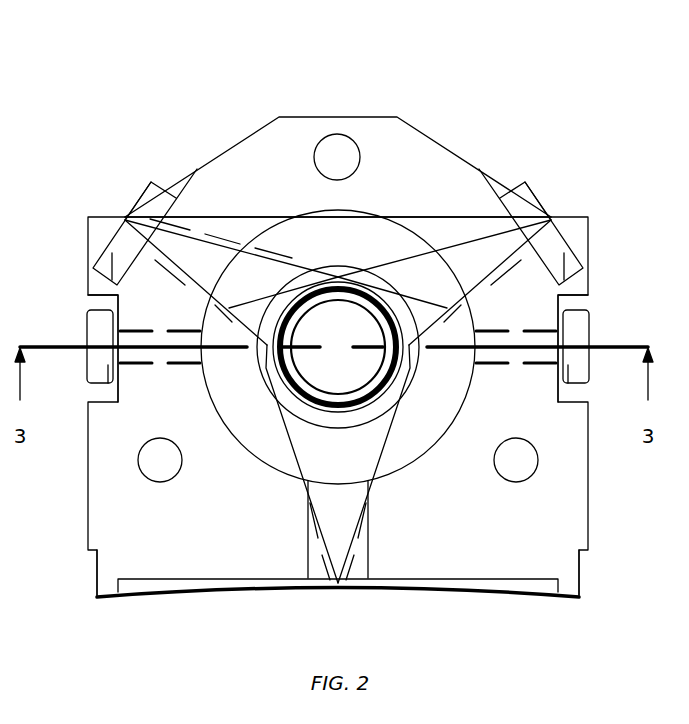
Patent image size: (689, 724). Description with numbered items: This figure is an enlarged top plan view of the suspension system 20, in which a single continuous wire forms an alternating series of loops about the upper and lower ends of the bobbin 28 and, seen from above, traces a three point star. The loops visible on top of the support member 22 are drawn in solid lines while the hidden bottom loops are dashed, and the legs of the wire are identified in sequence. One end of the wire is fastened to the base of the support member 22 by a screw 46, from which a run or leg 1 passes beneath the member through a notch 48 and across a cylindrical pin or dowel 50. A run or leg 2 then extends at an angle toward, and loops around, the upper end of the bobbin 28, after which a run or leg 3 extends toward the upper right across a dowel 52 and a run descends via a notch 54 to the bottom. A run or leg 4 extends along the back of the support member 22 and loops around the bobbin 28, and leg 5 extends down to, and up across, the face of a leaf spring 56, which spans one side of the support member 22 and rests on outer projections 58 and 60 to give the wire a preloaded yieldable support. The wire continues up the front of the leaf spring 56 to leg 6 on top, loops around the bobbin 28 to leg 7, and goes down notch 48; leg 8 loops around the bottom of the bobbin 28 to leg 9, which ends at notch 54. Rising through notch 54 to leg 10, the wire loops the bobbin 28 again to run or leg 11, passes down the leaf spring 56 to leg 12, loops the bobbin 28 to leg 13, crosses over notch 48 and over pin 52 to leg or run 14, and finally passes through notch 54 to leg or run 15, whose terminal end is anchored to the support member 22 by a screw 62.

The chuck assembly 20 is at (175, 118).
The support member 22 is at (90, 497).
The leg or run 14 is at (258, 216).
The notch 48 is at (120, 216).
The cylindrical pin or dowel 50 is at (126, 212).
The dowel 52 is at (549, 210).
The notch 54 is at (556, 216).
The leg 13 is at (265, 238).
The run or leg 4 is at (412, 240).
The leg 7 is at (246, 258).
The leg 10 is at (465, 258).
The run or leg 2 is at (155, 244).
The leg 8 is at (202, 290).
The leg 9 is at (465, 292).
The run or leg 3 is at (450, 300).
The bobbin 28 is at (325, 316).
The run or leg 11 is at (342, 464).
The leg 12 is at (382, 452).
The leg 5 is at (293, 452).
The leg 6 is at (350, 537).
The run or leg 1 is at (88, 300).
The leg or run 15 is at (588, 300).
The screw 46 is at (87, 325).
The screw 62 is at (589, 325).
The leaf spring 56 is at (440, 600).
The outer projection 58 is at (99, 600).
The outer projection 60 is at (578, 600).